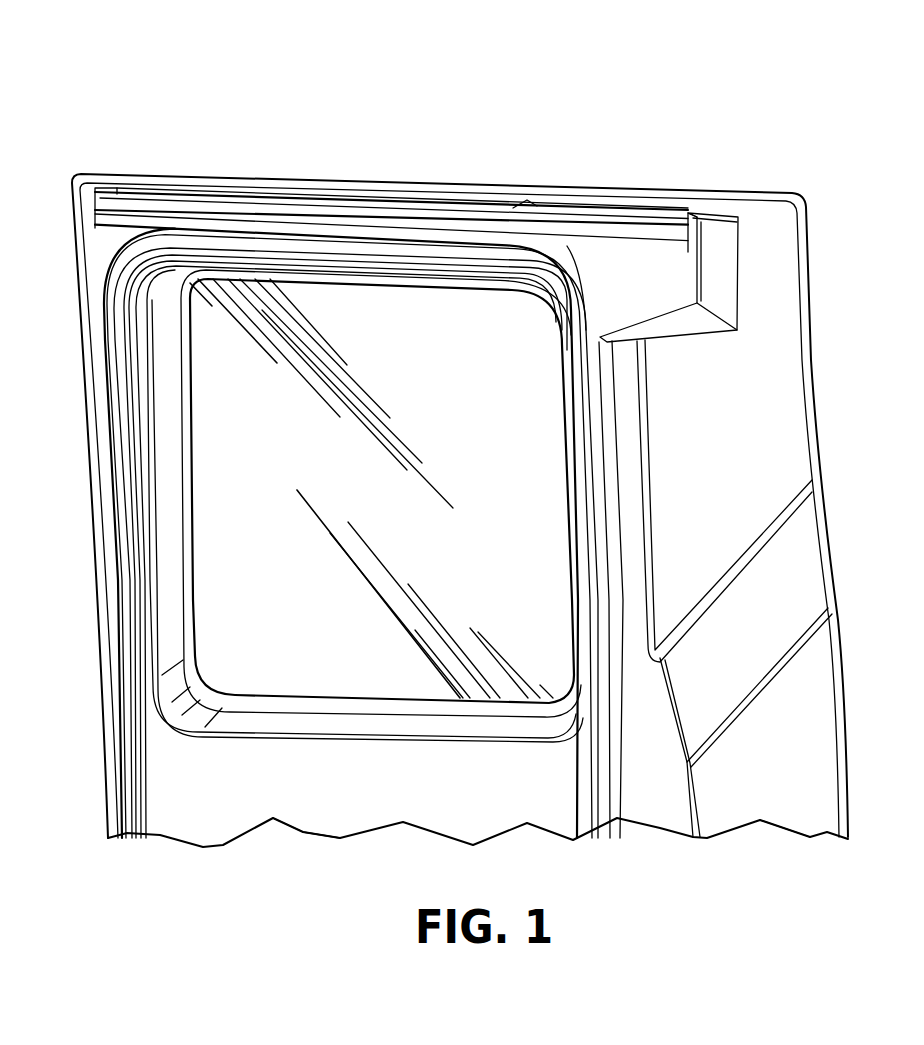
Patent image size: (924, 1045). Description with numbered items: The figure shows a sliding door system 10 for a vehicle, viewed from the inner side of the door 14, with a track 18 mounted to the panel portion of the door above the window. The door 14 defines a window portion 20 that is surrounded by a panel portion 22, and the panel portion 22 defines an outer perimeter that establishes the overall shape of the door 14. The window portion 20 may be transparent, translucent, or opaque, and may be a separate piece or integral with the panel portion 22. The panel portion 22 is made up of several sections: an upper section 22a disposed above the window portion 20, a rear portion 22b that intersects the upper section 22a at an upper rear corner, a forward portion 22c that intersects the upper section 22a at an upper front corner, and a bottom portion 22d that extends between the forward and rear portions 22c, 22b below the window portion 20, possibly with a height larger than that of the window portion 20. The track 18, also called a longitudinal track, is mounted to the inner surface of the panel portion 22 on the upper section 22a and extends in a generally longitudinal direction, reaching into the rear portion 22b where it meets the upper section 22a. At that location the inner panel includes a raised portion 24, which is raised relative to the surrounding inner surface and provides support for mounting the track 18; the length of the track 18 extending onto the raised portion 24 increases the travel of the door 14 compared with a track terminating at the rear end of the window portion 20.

The sliding door system 10 is at (627, 98).
The door 14 is at (840, 638).
The track 18 is at (125, 208).
The window portion 20 is at (368, 313).
The panel portion 22 is at (763, 220).
The upper section 22a is at (243, 175).
The rear portion 22b is at (799, 754).
The forward portion 22c is at (120, 542).
The bottom portion 22d is at (330, 788).
The raised portion 24 is at (704, 267).